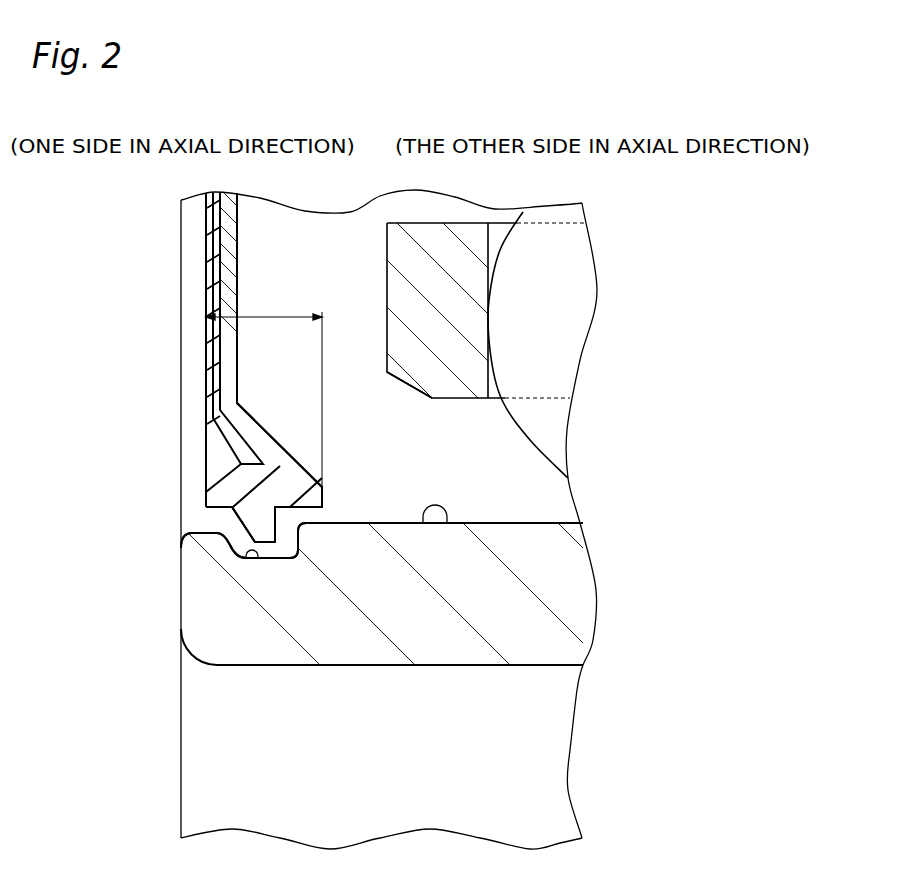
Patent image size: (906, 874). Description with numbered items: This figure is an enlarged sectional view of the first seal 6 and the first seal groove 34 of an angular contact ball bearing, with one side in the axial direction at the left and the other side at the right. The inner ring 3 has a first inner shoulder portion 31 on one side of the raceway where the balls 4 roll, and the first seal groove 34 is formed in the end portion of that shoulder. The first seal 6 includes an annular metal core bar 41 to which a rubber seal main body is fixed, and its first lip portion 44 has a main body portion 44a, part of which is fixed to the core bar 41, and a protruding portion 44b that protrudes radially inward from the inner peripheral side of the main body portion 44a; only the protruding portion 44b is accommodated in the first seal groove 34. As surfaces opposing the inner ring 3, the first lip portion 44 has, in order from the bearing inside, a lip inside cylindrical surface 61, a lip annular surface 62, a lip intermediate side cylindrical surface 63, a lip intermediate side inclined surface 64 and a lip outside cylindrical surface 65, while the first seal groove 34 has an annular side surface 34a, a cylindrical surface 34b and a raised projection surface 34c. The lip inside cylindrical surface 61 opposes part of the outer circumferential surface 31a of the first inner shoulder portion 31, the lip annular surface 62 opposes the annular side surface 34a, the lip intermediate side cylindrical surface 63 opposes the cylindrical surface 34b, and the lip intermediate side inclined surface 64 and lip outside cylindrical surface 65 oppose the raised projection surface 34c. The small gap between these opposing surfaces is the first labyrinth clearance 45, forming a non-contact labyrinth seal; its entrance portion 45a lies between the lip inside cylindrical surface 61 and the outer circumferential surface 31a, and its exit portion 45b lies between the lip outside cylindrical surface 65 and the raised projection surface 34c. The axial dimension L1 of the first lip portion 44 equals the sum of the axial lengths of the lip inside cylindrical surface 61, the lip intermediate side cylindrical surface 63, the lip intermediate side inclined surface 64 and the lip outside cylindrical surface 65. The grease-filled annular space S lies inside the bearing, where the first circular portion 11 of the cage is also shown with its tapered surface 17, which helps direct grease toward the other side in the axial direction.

The inner ring 3 is at (522, 633).
The first inner shoulder portion 31 is at (483, 531).
The outer circumferential surface 31a is at (447, 524).
The first seal groove 34 is at (228, 524).
The annular side surface 34a is at (289, 500).
The cylindrical surface 34b is at (243, 560).
The raised projection surface 34c is at (190, 533).
The core bar 41 is at (224, 274).
The first lip portion 44 is at (280, 440).
The main body portion 44a is at (235, 477).
The protruding portion 44b is at (270, 480).
The first labyrinth clearance 45 is at (323, 513).
The entrance portion 45a is at (325, 517).
The exit portion 45b is at (202, 519).
The ball 4 is at (535, 423).
The first seal 6 is at (205, 343).
The first circular portion 11 is at (398, 251).
The tapered surface 17 is at (403, 385).
The lip inside cylindrical surface 61 is at (308, 523).
The lip annular surface 62 is at (288, 532).
The lip intermediate side cylindrical surface 63 is at (266, 546).
The lip intermediate side inclined surface 64 is at (233, 534).
The lip outside cylindrical surface 65 is at (205, 522).
The annular space S is at (257, 237).
The axial dimension L1 is at (264, 391).